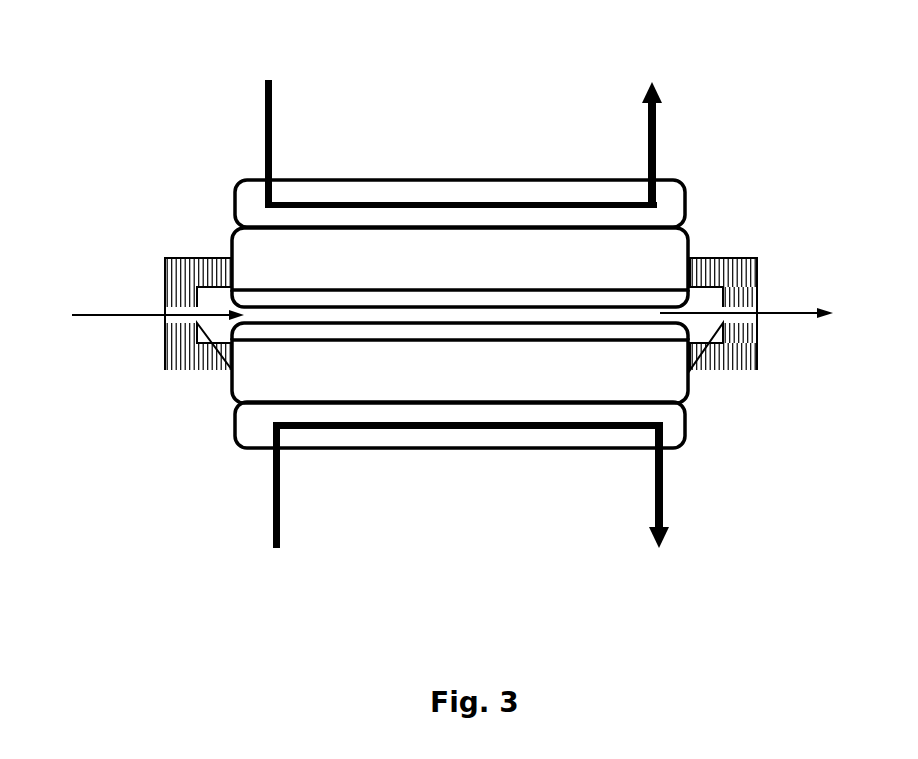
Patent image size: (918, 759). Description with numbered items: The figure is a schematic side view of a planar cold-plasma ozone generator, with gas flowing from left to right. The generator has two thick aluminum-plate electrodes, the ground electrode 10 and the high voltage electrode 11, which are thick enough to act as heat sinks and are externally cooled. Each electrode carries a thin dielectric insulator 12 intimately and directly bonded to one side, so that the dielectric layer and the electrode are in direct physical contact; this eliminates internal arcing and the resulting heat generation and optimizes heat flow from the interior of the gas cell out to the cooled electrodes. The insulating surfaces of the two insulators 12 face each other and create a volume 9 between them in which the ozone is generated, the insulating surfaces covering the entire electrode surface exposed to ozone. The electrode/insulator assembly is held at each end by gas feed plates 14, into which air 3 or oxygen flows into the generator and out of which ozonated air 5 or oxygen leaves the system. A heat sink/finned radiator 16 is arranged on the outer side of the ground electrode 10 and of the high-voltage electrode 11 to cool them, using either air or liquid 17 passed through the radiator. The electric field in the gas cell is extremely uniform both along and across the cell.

The air 3 is at (144, 316).
The ozonated air 5 is at (757, 313).
The volume 9 is at (600, 315).
The ground electrode 10 is at (270, 267).
The high voltage electrode 11 is at (270, 365).
The dielectric insulator 12 is at (657, 297).
The gas feed plate 14 is at (172, 363).
The heat sink/finned radiator 16 is at (413, 178).
The air or liquid 17 is at (463, 321).